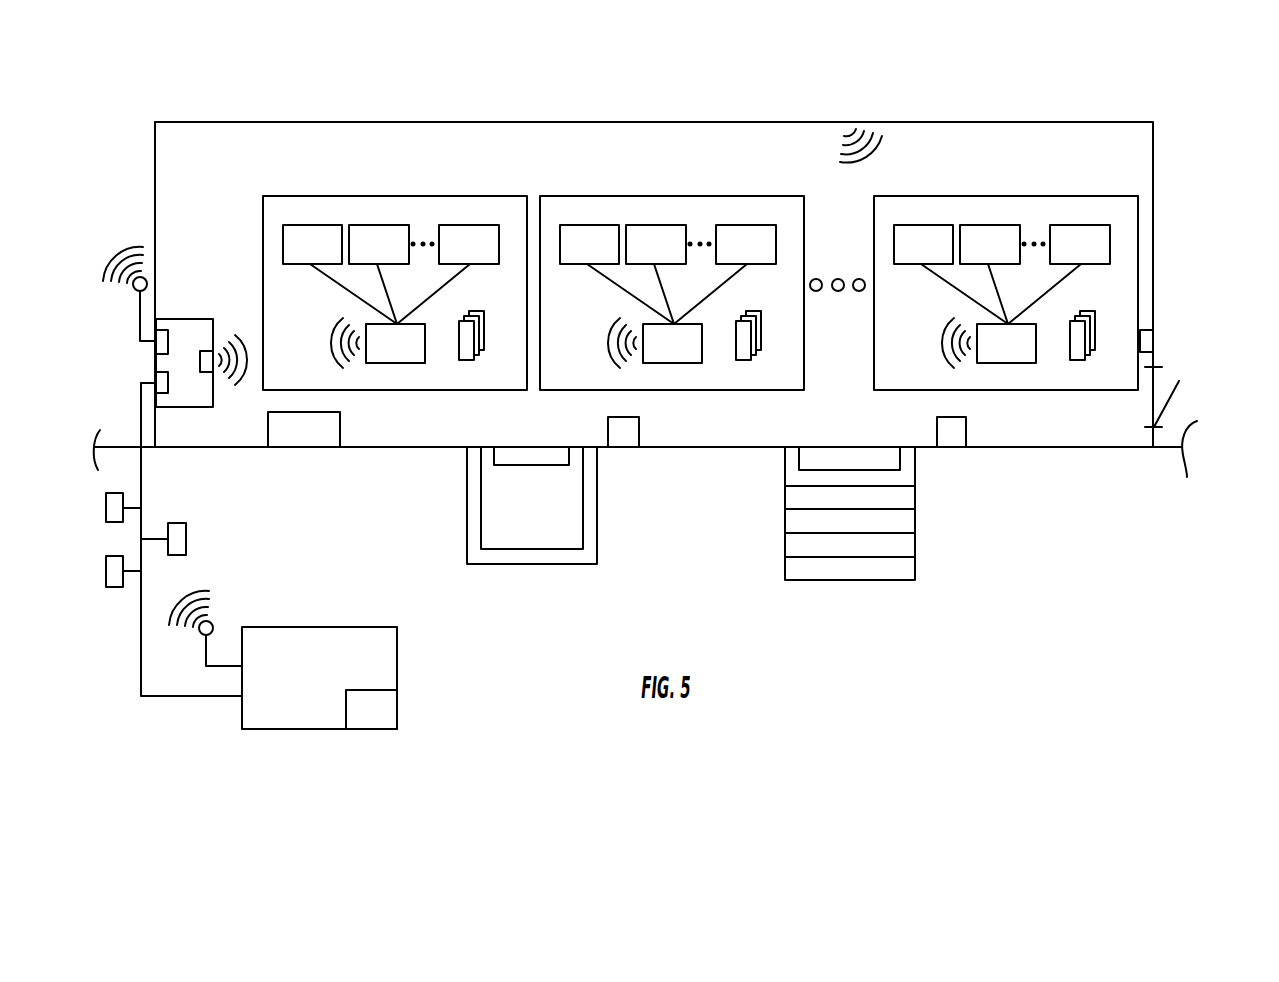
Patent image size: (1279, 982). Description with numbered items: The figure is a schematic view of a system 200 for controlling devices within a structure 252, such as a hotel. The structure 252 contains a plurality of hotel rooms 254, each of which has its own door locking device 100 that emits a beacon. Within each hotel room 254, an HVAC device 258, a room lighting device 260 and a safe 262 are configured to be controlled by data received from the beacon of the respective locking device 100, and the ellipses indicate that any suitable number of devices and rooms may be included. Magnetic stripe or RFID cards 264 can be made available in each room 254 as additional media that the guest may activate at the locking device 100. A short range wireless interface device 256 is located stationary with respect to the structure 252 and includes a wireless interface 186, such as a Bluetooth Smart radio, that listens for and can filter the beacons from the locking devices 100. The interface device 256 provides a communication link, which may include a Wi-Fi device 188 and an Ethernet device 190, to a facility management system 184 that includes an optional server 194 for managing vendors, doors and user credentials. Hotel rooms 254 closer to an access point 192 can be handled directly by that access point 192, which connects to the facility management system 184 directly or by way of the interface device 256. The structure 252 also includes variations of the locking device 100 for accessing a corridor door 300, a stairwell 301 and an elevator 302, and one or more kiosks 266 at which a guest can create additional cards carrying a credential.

The door locking device 100 is at (1193, 305).
The facility management system 184 is at (335, 688).
The wireless interface 186 is at (259, 478).
The Wi-Fi device 188 is at (122, 182).
The Ethernet device 190 is at (206, 472).
The access point 192 is at (850, 128).
The server 194 is at (368, 782).
The system 200 is at (1069, 505).
The structure 252 is at (1122, 122).
The hotel room 254 is at (526, 250).
The short range wireless interface device 256 is at (181, 318).
The HVAC device 258 is at (305, 77).
The room lighting device 260 is at (375, 77).
The safe 262 is at (452, 77).
The magnetic stripe or RFID cards 264 is at (486, 466).
The kiosk 266 is at (326, 498).
The corridor door 300 is at (1168, 378).
The stairwell 301 is at (800, 522).
The elevator 302 is at (542, 628).